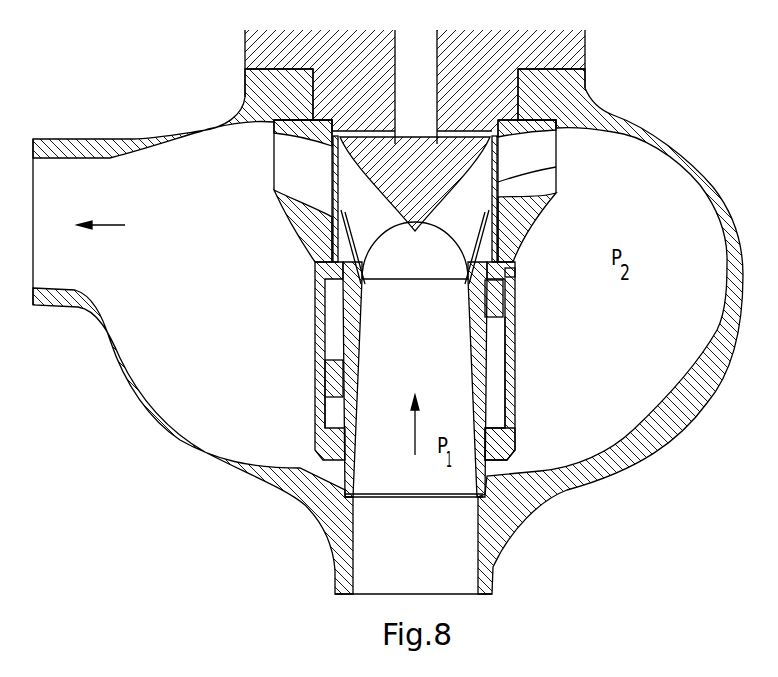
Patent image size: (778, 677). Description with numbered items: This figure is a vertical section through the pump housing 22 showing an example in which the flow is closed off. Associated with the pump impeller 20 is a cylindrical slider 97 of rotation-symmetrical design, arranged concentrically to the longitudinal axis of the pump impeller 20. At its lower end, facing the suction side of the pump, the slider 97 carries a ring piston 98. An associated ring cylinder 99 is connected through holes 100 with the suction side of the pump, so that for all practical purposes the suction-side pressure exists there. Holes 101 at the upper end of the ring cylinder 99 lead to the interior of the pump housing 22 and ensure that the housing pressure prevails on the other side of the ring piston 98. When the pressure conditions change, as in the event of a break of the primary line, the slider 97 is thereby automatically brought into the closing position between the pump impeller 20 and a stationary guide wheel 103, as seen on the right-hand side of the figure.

The pump impeller 20 is at (397, 172).
The pump housing 22 is at (178, 438).
The cylindrical slider 97 is at (497, 182).
The ring piston 98 is at (500, 298).
The ring cylinder 99 is at (497, 358).
The holes 100 is at (490, 425).
The holes 101 is at (508, 272).
The stationary guide wheel 103 is at (535, 153).